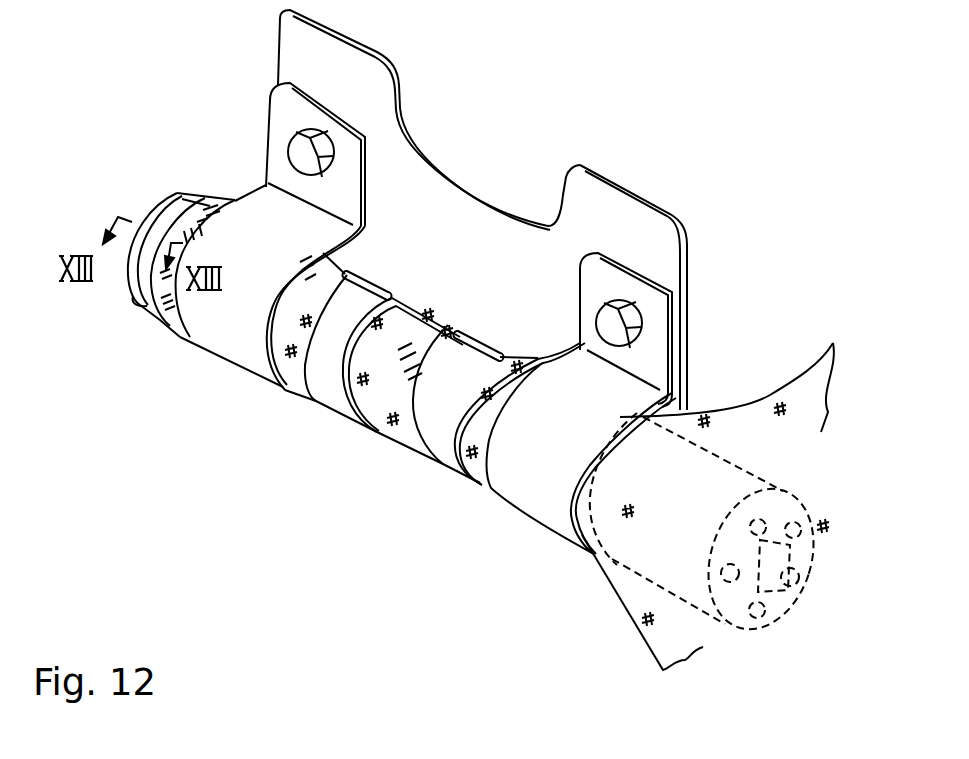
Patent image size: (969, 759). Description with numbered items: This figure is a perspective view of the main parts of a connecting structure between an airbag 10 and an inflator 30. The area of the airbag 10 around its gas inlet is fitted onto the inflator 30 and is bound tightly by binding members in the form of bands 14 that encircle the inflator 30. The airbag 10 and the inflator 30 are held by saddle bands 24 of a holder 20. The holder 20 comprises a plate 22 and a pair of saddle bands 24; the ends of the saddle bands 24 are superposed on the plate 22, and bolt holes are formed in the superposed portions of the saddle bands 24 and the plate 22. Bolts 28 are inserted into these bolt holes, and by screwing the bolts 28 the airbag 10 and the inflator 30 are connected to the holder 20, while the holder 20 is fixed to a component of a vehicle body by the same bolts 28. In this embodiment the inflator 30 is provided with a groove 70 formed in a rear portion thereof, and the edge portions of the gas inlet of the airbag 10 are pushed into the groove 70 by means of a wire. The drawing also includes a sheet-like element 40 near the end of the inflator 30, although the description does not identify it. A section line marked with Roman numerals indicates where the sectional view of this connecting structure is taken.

The airbag 10 is at (799, 387).
The bands 14 is at (327, 388).
The holder 20 is at (364, 47).
The plate 22 is at (458, 218).
The saddle bands 24 is at (228, 343).
The bolts 28 is at (304, 152).
The inflator 30 is at (178, 193).
The sheet 40 is at (612, 560).
The groove 70 is at (134, 298).